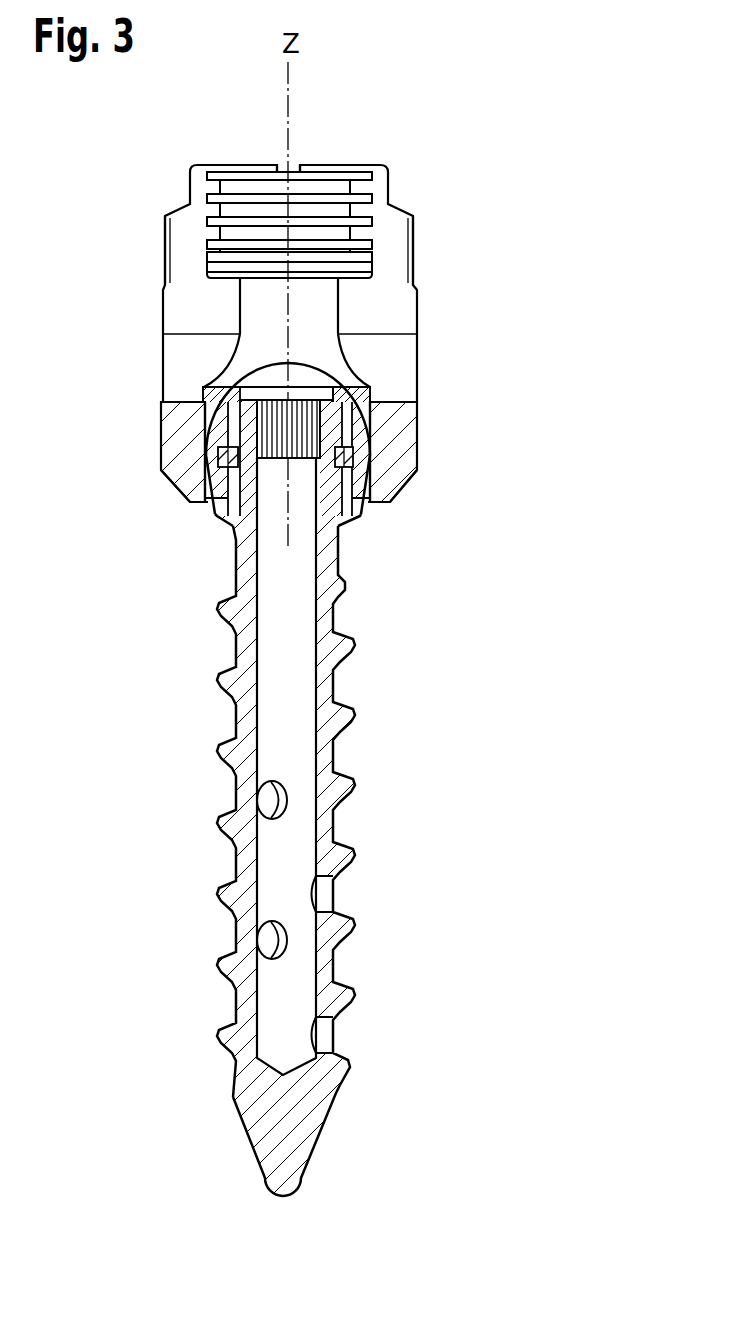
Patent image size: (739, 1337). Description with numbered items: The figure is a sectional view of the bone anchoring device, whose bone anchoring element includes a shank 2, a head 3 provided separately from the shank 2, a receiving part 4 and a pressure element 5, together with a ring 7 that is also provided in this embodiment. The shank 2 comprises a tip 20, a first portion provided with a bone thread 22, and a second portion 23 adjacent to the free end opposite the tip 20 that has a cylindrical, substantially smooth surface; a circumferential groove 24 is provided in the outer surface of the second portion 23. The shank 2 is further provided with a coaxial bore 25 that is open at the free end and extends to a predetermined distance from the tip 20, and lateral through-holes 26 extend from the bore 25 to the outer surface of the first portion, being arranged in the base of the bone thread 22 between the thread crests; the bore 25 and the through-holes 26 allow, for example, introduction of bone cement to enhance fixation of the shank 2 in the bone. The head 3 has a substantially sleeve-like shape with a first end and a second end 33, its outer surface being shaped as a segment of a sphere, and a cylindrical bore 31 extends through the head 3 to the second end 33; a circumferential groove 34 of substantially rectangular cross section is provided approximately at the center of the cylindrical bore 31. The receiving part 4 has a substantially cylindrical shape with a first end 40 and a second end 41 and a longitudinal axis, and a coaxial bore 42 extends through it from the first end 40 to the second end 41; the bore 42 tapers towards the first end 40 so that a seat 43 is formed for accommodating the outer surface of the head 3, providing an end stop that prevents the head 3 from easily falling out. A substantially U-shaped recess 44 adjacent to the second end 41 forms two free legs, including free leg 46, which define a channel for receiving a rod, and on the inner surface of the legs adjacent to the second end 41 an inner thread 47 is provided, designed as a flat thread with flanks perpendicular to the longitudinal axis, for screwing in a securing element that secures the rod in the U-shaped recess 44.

The shank 2 is at (303, 827).
The head 3 is at (223, 423).
The receiving part 4 is at (418, 412).
The pressure element 5 is at (362, 388).
The ring 7 is at (218, 460).
The tip 20 is at (295, 1180).
The bone thread 22 is at (350, 927).
The second portion 23 is at (217, 458).
The circumferential groove 24 is at (288, 501).
The coaxial bore 25 is at (300, 688).
The lateral through-holes 26 is at (268, 802).
The cylindrical bore 31 is at (213, 387).
The second end 33 is at (224, 516).
The circumferential groove 34 is at (355, 455).
The first end 40 is at (376, 506).
The second end 41 is at (349, 163).
The coaxial bore 42 is at (243, 288).
The seat 43 is at (357, 493).
The U-shaped recess 44 is at (392, 322).
The free leg 46 is at (412, 218).
The inner thread 47 is at (235, 172).